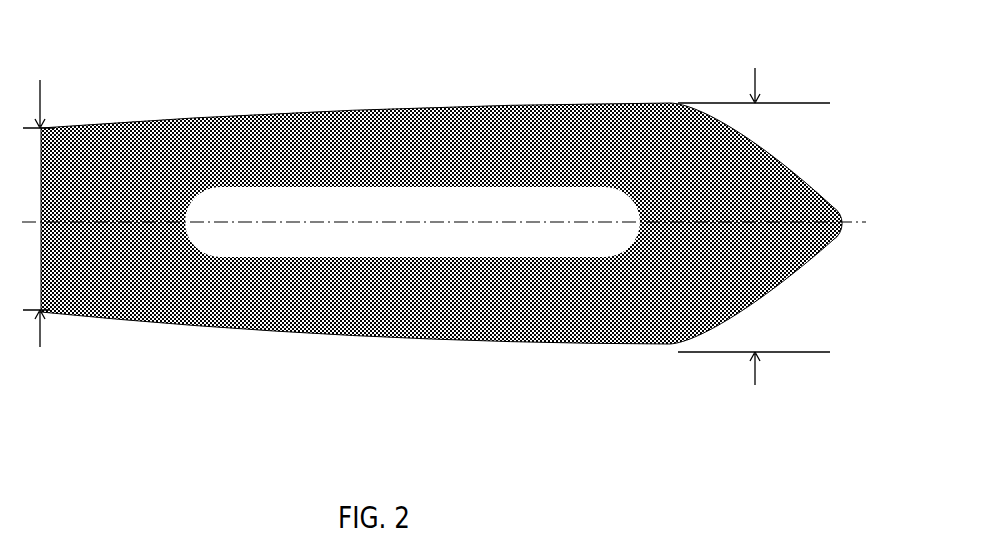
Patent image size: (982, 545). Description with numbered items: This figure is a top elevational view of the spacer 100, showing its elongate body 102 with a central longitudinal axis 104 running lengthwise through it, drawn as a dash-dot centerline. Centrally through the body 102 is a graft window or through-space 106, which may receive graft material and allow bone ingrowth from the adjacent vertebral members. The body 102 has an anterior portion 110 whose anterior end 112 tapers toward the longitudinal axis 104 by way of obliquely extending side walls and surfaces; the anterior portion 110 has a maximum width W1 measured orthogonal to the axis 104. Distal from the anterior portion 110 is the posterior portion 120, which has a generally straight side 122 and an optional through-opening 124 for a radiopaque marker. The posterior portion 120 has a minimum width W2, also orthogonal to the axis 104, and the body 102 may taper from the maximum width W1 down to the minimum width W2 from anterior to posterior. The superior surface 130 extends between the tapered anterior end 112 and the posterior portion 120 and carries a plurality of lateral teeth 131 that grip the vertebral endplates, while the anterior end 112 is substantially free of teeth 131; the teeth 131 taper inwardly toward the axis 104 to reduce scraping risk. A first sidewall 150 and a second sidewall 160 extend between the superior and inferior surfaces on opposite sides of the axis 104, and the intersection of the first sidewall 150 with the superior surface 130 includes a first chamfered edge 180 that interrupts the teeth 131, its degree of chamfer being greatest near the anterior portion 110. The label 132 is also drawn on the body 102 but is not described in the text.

The spacer 100 is at (707, 57).
The elongate body 102 is at (260, 115).
The central longitudinal axis 104 is at (720, 225).
The through-space 106 is at (344, 246).
The anterior portion 110 is at (630, 103).
The anterior end 112 is at (757, 147).
The posterior portion 120 is at (78, 128).
The straight side 122 is at (41, 268).
The through-opening 124 is at (97, 227).
The superior surface 130 is at (332, 127).
The lateral teeth 131 is at (135, 133).
The transition region 132 is at (673, 103).
The first sidewall 150 is at (432, 332).
The second sidewall 160 is at (480, 100).
The first chamfered edge 180 is at (627, 343).
The maximum width W1 is at (806, 63).
The minimum width W2 is at (43, 102).